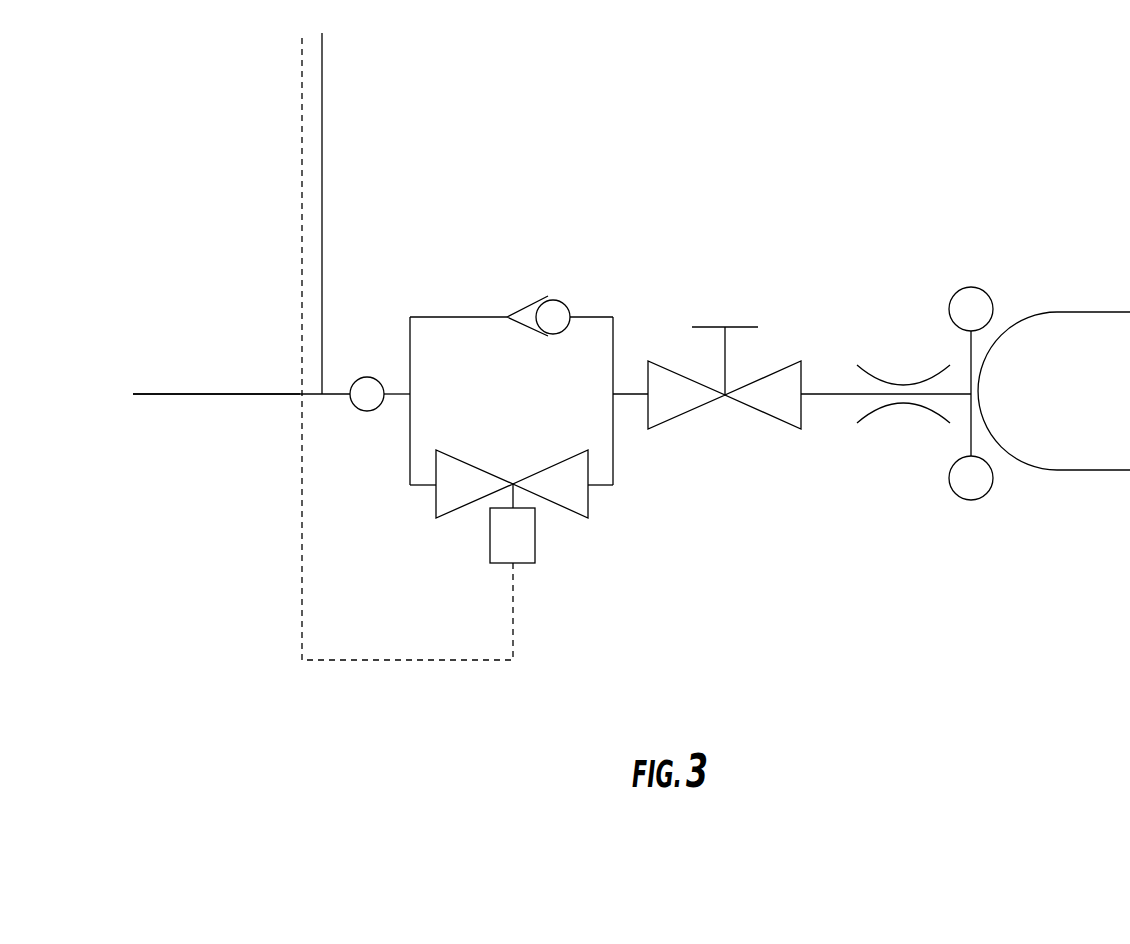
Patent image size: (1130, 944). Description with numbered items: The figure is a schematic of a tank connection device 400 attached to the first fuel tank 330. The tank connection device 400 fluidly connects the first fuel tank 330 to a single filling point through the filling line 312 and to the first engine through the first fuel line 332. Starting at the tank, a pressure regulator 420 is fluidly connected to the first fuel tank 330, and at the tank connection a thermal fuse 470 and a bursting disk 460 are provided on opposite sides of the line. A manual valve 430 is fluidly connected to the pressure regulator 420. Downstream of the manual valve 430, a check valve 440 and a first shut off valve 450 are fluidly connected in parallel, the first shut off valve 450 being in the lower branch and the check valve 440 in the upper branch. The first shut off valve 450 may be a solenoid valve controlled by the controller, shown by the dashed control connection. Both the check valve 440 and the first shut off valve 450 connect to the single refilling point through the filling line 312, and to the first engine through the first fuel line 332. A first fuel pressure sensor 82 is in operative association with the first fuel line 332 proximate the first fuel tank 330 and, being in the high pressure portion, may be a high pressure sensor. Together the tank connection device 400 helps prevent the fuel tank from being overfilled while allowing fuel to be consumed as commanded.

The tank connection device 400 is at (810, 190).
The first fuel line 332 is at (322, 155).
The filling line 312 is at (241, 398).
The first fuel pressure sensor 82 is at (365, 406).
The check valve 440 is at (527, 296).
The first shut off valve 450 is at (540, 530).
The manual valve 430 is at (744, 416).
The pressure regulator 420 is at (921, 416).
The thermal fuse 470 is at (950, 294).
The bursting disk 460 is at (967, 501).
The first fuel tank 330 is at (1072, 464).